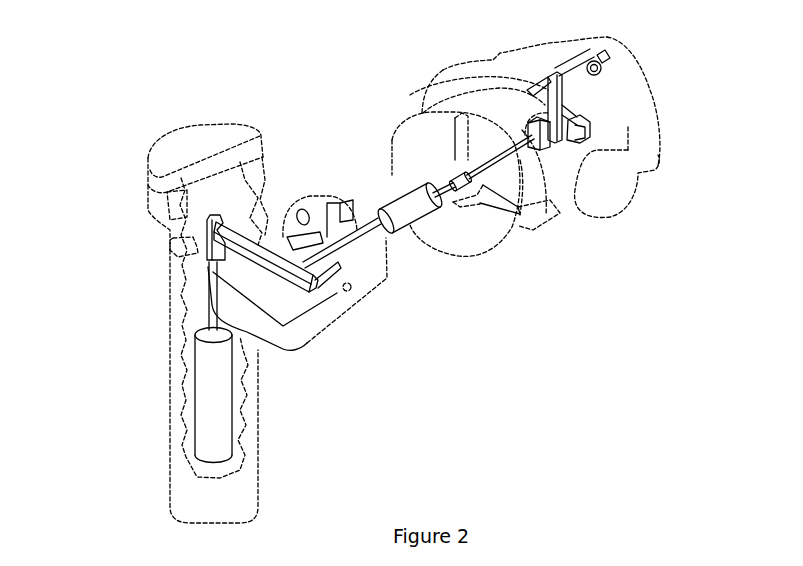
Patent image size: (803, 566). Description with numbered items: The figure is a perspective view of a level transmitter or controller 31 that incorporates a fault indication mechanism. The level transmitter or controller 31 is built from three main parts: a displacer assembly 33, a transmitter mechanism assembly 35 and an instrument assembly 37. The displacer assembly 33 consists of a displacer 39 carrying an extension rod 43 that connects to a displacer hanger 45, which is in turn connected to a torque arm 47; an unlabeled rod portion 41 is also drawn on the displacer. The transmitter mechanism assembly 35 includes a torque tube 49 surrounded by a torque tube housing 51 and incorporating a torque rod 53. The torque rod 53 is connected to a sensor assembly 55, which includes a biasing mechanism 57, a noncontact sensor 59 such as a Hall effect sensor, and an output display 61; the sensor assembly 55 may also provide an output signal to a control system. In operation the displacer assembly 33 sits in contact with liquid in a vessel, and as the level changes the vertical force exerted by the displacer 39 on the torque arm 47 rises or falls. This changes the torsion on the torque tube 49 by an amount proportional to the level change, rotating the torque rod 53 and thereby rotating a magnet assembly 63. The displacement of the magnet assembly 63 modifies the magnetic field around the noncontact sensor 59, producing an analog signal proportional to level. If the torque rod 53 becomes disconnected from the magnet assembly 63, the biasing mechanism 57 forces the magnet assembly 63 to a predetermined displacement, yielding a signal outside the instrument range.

The level transmitter or controller 31 is at (229, 37).
The displacer assembly 33 is at (131, 220).
The transmitter mechanism assembly 35 is at (433, 304).
The instrument assembly 37 is at (521, 35).
The displacer 39 is at (233, 442).
The piston rod 41 is at (258, 420).
The extension rod 43 is at (167, 332).
The displacer hanger 45 is at (167, 280).
The torque arm 47 is at (265, 237).
The torque tube 49 is at (462, 172).
The torque tube housing 51 is at (378, 208).
The torque rod 53 is at (527, 143).
The sensor assembly 55 is at (648, 144).
The biasing mechanism 57 is at (527, 80).
The noncontact sensor 59 is at (583, 92).
The output display 61 is at (647, 88).
The magnet assembly 63 is at (527, 80).